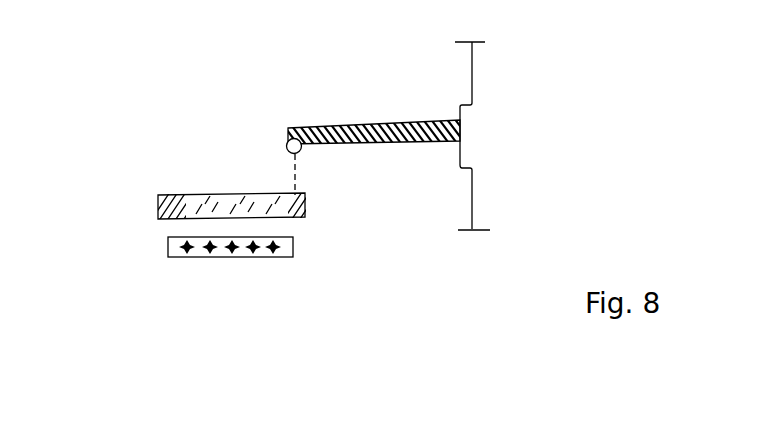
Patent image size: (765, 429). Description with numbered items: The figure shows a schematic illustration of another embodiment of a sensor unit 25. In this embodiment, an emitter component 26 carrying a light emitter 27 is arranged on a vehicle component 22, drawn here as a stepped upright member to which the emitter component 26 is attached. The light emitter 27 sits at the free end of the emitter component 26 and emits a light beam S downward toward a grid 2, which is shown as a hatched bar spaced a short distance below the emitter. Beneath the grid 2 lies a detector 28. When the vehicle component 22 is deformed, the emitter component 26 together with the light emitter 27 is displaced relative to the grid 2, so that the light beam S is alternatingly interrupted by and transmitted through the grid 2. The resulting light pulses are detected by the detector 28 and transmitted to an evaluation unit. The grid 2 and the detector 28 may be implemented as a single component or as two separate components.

The grid 2 is at (154, 193).
The vehicle component 22 is at (481, 72).
The sensor unit 25 is at (155, 112).
The emitter component 26 is at (395, 119).
The light emitter 27 is at (289, 139).
The detector 28 is at (177, 260).
The light beam S is at (299, 168).